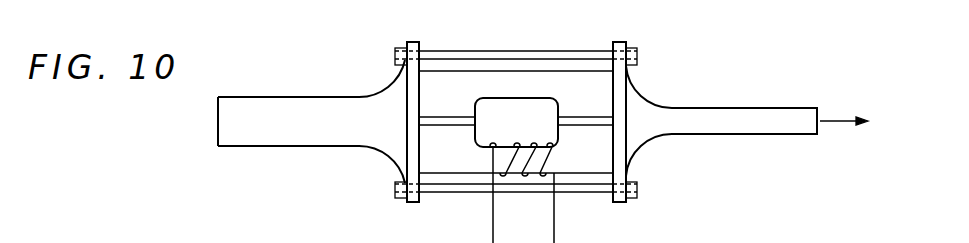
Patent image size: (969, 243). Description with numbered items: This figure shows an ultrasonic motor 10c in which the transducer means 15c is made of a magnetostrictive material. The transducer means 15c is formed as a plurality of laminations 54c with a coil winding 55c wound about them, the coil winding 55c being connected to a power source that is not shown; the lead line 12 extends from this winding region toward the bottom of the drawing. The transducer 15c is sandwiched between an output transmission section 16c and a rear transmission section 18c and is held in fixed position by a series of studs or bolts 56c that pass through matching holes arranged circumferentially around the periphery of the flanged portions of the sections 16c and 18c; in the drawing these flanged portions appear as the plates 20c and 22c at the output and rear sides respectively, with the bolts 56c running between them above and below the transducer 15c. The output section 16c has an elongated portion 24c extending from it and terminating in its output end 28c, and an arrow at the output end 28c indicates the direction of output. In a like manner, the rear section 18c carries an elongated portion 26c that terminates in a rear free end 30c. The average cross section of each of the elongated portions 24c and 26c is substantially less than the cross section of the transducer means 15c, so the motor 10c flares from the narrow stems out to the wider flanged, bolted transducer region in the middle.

The ultrasonic motor 10c is at (650, 95).
The lead wire 12 is at (540, 195).
The transducer means 15c is at (580, 70).
The output transmission section 16c is at (652, 142).
The rear transmission section 18c is at (376, 152).
The output flange 20c is at (624, 43).
The input flange 22c is at (410, 42).
The elongated portion 24c is at (747, 113).
The elongated portion 26c is at (291, 103).
The output end 28c is at (820, 117).
The rear free end 30c is at (218, 133).
The laminations 54c is at (466, 77).
The coil winding 55c is at (556, 212).
The studs or bolts 56c is at (560, 55).